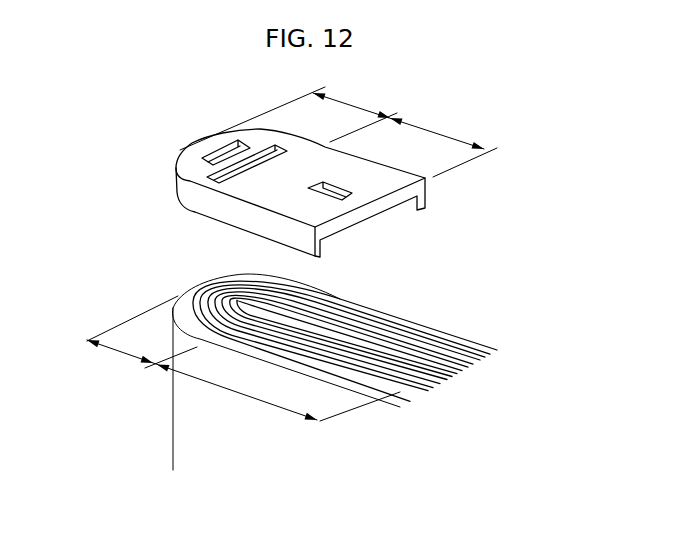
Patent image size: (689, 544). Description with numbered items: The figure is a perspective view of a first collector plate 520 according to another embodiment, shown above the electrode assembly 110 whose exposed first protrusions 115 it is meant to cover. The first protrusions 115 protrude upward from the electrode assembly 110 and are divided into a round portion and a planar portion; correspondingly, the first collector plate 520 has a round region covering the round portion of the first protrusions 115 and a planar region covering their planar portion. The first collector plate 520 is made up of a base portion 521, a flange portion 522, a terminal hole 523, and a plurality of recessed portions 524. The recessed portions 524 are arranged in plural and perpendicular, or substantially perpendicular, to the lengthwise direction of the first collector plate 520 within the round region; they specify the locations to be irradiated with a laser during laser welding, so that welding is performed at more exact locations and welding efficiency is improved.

The first collector plate 520 is at (295, 182).
The base portion 521 is at (327, 210).
The flange portion 522 is at (220, 211).
The terminal hole 523 is at (352, 194).
The recessed portions 524 is at (207, 178).
The electrode assembly 110 is at (292, 372).
The first protrusions 115 is at (200, 284).